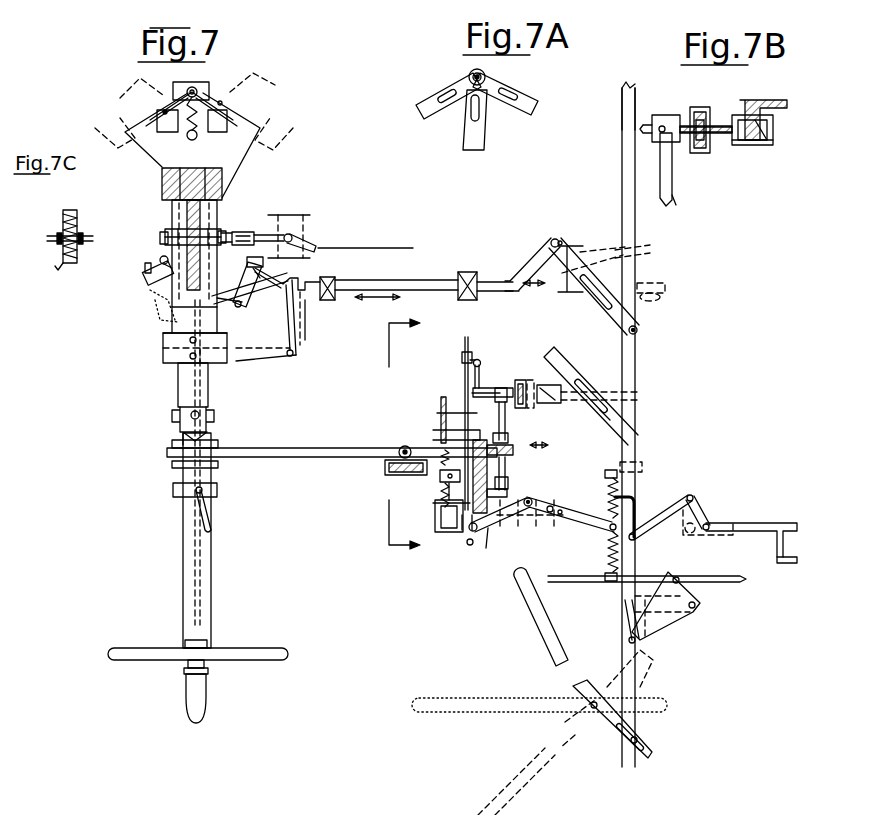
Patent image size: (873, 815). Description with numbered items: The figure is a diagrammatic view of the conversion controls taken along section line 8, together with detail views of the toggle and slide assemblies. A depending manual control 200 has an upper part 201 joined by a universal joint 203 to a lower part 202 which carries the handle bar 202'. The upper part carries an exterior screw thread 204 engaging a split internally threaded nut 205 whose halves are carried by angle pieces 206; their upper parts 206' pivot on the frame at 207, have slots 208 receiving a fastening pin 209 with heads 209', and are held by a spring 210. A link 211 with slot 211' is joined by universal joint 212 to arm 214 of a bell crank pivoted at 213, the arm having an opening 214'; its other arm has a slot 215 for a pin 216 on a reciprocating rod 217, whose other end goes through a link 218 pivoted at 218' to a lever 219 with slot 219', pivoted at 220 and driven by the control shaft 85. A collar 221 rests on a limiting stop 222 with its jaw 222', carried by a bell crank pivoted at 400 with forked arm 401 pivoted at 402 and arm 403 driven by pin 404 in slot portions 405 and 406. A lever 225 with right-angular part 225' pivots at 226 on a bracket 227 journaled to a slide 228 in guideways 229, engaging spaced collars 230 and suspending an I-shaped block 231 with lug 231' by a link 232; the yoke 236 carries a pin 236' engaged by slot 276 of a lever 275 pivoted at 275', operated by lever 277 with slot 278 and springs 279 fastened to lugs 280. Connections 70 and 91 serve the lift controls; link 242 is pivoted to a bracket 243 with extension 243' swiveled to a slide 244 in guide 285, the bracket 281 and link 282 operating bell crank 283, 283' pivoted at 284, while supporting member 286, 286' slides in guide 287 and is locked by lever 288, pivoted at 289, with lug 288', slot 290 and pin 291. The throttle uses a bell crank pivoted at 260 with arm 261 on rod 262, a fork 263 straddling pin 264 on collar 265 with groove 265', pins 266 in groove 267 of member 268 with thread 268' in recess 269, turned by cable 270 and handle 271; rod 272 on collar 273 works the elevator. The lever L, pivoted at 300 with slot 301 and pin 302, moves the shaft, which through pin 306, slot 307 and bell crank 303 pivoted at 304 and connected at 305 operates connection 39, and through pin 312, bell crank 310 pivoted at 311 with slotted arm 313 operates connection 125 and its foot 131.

In FIG. 7, the depending manual control 200 is at (158, 392).
In FIG. 7, the upper part of manual control 201 is at (208, 388).
In FIG. 7, the lower part of manual control 202 is at (220, 540).
In FIG. 7, the handle bar 202' is at (198, 641).
In FIG. 7, the universal joint 203 is at (178, 419).
In FIG. 7, the exterior screw thread 204 is at (183, 213).
In FIG. 7, the internally threaded nut 205 is at (162, 190).
In FIG. 7, the angle pieces 206 is at (195, 145).
In FIG. 7, the upper parts of angle pieces 206' is at (187, 111).
In FIG. 7, the fixed pivot 207 is at (155, 92).
In FIG. 7A, the slots 208 is at (450, 92).
In FIG. 7A, the fastening pin 209 is at (455, 69).
In FIG. 7A, the heads 209' is at (507, 66).
In FIG. 7, the spring 210 is at (178, 140).
In FIG. 7, the link 211 is at (165, 237).
In FIG. 7A, the link 211 is at (448, 120).
In FIG. 7A, the slot 211' is at (503, 115).
In FIG. 7, the universal joint 212 is at (172, 259).
In FIG. 7, the fixed pivot of bell crank lever 213 is at (258, 308).
In FIG. 7, the bell crank arm 214 is at (146, 276).
In FIG. 7, the recess or opening 214' is at (145, 304).
In FIG. 7, the slot 215 is at (258, 285).
In FIG. 7, the actuating pin 216 is at (285, 282).
In FIG. 7, the reciprocating rod 217 is at (305, 312).
In FIG. 7, the link 218 is at (531, 264).
In FIG. 7, the pivot 218' is at (578, 233).
In FIG. 7, the lever 219 is at (594, 288).
In FIG. 7, the slot 219' is at (593, 283).
In FIG. 7, the fixed pivot of lever 220 is at (638, 280).
In FIG. 7, the collar 221 is at (172, 335).
In FIG. 7, the limiting stop 222 is at (172, 348).
In FIG. 7, the clamp jaw 222' is at (180, 366).
In FIG. 7, the lever 225 is at (332, 465).
In FIG. 7, the right-angular part of lever 225' is at (516, 476).
In FIG. 7, the pivot 226 is at (400, 446).
In FIG. 7, the bracket 227 is at (392, 460).
In FIG. 7, the slide 228 is at (392, 476).
In FIG. 7, the guideways 229 is at (430, 482).
In FIG. 7, the spaced collars 230 is at (220, 443).
In FIG. 7, the I-shaped block 231 is at (442, 430).
In FIG. 7, the projecting lug or flange 231' is at (570, 493).
In FIG. 7, the link 232 is at (510, 478).
In FIG. 7, the bifurcated reciprocating yoke member 236 is at (447, 524).
In FIG. 7, the pin 236' is at (481, 537).
In FIG. 7, the link or arm 242 is at (472, 365).
In FIG. 7B, the bracket 243 is at (688, 164).
In FIG. 7, the extension of bracket 243' is at (450, 374).
In FIG. 7B, the extension of bracket 243' is at (677, 104).
In FIG. 7B, the slide 244 is at (700, 155).
In FIG. 7, the fixed pivot of throttle bell crank 260 is at (294, 236).
In FIG. 7, the bell crank arm 261 is at (310, 242).
In FIG. 7, the throttle control rod 262 is at (364, 247).
In FIG. 7, the fork 263 is at (253, 234).
In FIG. 7, the pin 264 is at (244, 230).
In FIG. 7, the vertically adjustable collar 265 is at (246, 203).
In FIG. 7, the groove 265' is at (132, 250).
In FIG. 7C, the pins 266 is at (62, 238).
In FIG. 7C, the annular groove 267 is at (58, 250).
In FIG. 7, the vertically adjustable member 268 is at (109, 278).
In FIG. 7C, the screw threaded part 268' is at (52, 220).
In FIG. 7, the screw threaded recess 269 is at (222, 236).
In FIG. 7, the flexible torque transmitting cable 270 is at (195, 602).
In FIG. 7, the operating handle 271 is at (210, 700).
In FIG. 7, the operating connection or rod 272 is at (212, 520).
In FIG. 7, the collar 273 is at (173, 496).
In FIG. 7, the lever 275 is at (542, 525).
In FIG. 7, the fixed pivot 275' is at (510, 552).
In FIG. 7, the slot 276 is at (470, 545).
In FIG. 7, the lever 277 is at (565, 510).
In FIG. 7, the slot 278 is at (545, 530).
In FIG. 7, the springs 279 is at (625, 495).
In FIG. 7, the lugs 280 is at (630, 460).
In FIG. 7, the bracket 281 is at (470, 352).
In FIG. 7, the link 282 is at (480, 358).
In FIG. 7, the bell crank lever 283 is at (554, 424).
In FIG. 7B, the bell crank lever 283 is at (643, 97).
In FIG. 7, the bell crank arm 283' is at (441, 410).
In FIG. 7B, the bell crank arm 283' is at (704, 218).
In FIG. 7, the pivot 284 is at (502, 388).
In FIG. 7B, the pivot 284 is at (665, 150).
In FIG. 7, the fixed guideway 285 is at (517, 378).
In FIG. 7B, the fixed guideway 285 is at (706, 150).
In FIG. 7, the supporting member 286 is at (549, 362).
In FIG. 7B, the supporting member 286 is at (716, 103).
In FIG. 7B, the supporting member part 286' is at (757, 175).
In FIG. 7, the guide 287 is at (548, 405).
In FIG. 7B, the guide 287 is at (748, 150).
In FIG. 7, the locking lever 288 is at (591, 396).
In FIG. 7B, the locking lever 288 is at (768, 106).
In FIG. 7, the locking lug 288' is at (570, 366).
In FIG. 7B, the locking lug 288' is at (778, 145).
In FIG. 7, the pivot 289 is at (575, 395).
In FIG. 7, the slot 290 is at (618, 415).
In FIG. 7, the pin 291 is at (625, 436).
In FIG. 7, the pivot of lever L 300 is at (596, 712).
In FIG. 7, the elongated slot 301 is at (640, 742).
In FIG. 7, the pin 302 is at (640, 733).
In FIG. 7, the bell crank 303 is at (700, 594).
In FIG. 7, the pivot 304 is at (696, 606).
In FIG. 7, the pivotal connection 305 is at (682, 576).
In FIG. 7, the pin 306 is at (628, 641).
In FIG. 7, the slot 307 is at (630, 620).
In FIG. 7, the bell crank 310 is at (704, 512).
In FIG. 7, the fixed pivot 311 is at (694, 498).
In FIG. 7, the pin 312 is at (638, 540).
In FIG. 7, the slotted arm 313 is at (662, 500).
In FIG. 7, the connection 39 is at (706, 577).
In FIG. 7, the connection 70 is at (443, 397).
In FIG. 7, the control shaft or rod 85 is at (638, 332).
In FIG. 7, the connection 91 is at (466, 337).
In FIG. 7, the operating connection 125 is at (743, 522).
In FIG. 7, the foot 131 is at (790, 563).
In FIG. 7, the fixed pivot 400 is at (298, 358).
In FIG. 7, the forked arm 401 is at (288, 356).
In FIG. 7, the pivot 402 is at (236, 308).
In FIG. 7, the bell crank arm 403 is at (300, 340).
In FIG. 7, the pin 404 is at (350, 292).
In FIG. 7, the horizontal slot portion 405 is at (308, 320).
In FIG. 7, the angled slot portion 406 is at (328, 277).
In FIG. 7, the section line 8 is at (404, 434).
In FIG. 7, the lever L is at (510, 626).